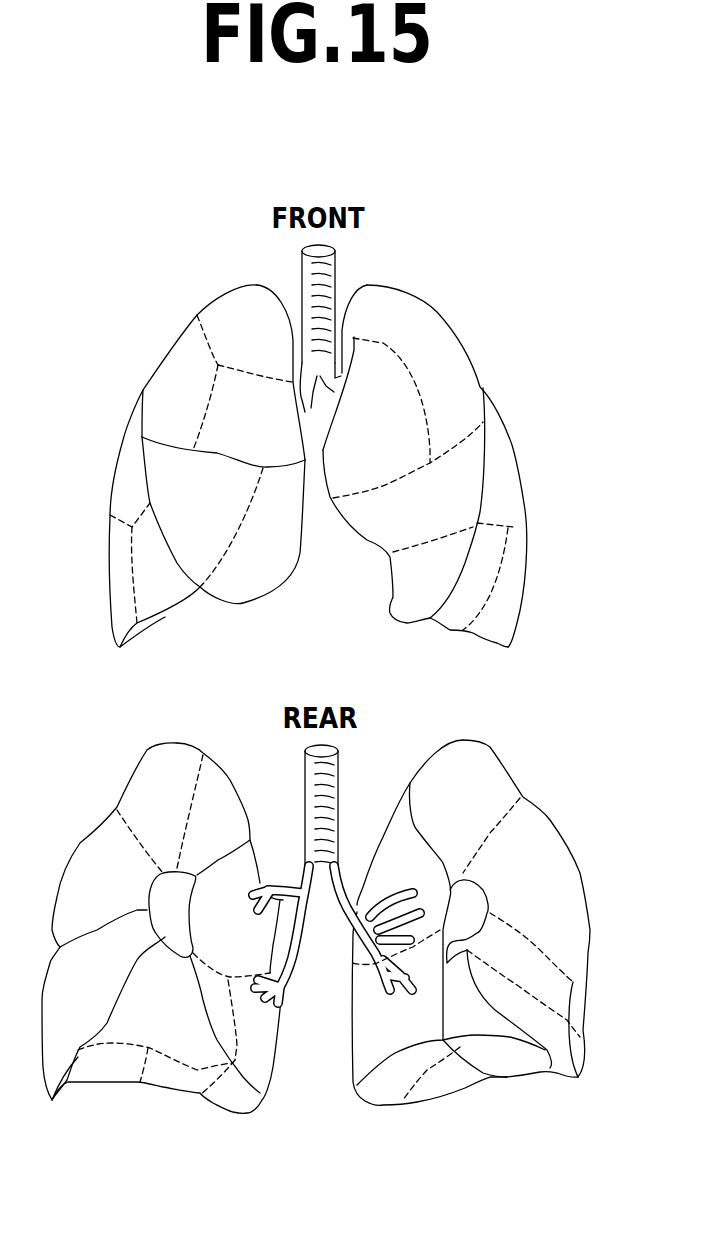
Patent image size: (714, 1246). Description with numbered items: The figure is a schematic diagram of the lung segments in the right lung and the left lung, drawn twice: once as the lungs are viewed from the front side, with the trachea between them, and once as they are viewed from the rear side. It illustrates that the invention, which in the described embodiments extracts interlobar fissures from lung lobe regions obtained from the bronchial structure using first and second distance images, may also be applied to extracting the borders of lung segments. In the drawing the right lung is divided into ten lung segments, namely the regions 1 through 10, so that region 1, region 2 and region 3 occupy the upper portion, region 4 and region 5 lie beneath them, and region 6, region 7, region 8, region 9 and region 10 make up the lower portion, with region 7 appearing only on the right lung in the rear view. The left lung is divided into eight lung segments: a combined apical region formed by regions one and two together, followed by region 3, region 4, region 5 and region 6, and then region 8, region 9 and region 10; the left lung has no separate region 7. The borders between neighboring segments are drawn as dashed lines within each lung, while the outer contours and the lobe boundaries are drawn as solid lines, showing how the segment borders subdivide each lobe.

The lung segment region 1 is at (205, 591).
The lung segment region 2 is at (199, 599).
The lung segment region 3 is at (335, 691).
The lung segment region 4 is at (387, 752).
The lung segment region 5 is at (315, 786).
The lung segment region 6 is at (295, 775).
The lung segment region 7 is at (168, 1013).
The lung segment region 8 is at (320, 798).
The lung segment region 9 is at (312, 839).
The lung segment region 10 is at (319, 1020).